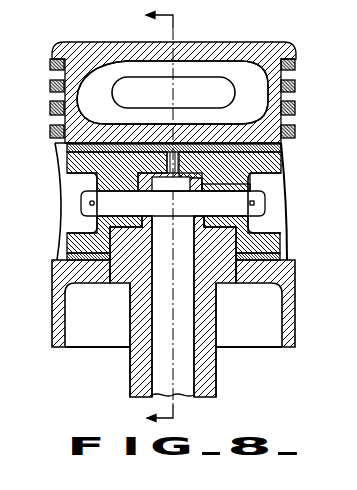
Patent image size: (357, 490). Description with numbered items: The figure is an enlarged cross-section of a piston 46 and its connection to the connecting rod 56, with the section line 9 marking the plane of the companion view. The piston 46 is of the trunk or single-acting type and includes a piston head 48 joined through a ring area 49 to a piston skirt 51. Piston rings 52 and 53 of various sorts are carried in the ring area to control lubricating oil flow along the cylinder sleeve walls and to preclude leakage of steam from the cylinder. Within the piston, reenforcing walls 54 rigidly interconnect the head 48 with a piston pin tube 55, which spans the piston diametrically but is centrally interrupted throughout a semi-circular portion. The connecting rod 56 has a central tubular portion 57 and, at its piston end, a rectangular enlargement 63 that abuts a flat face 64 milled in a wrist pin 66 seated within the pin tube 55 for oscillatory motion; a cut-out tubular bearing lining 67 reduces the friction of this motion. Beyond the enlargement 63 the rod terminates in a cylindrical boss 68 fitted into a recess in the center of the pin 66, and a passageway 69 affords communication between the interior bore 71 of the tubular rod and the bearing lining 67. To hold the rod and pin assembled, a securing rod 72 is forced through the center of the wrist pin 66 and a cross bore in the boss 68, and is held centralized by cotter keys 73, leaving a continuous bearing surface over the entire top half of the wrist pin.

The section line 9- 9 is at (167, 218).
The piston 46 is at (299, 312).
The piston head 48 is at (219, 44).
The ring area 49 is at (75, 95).
The piston skirt 51 is at (57, 313).
The piston ring 52 is at (296, 85).
The piston ring 53 is at (296, 128).
The reenforcing walls 54 is at (158, 72).
The piston pin tube 55 is at (192, 130).
The connecting rod 56 is at (218, 332).
The central tubular portion 57 is at (212, 376).
The rectangular enlargement 63 is at (121, 265).
The flat face 64 is at (280, 224).
The wrist pin 66 is at (283, 160).
The tubular bearing lining 67 is at (290, 147).
The cylindrical boss 68 is at (285, 182).
The passageway 69 is at (67, 163).
The interior bore 71 is at (162, 312).
The securing rod 72 is at (103, 212).
The cotter keys 73 is at (90, 201).